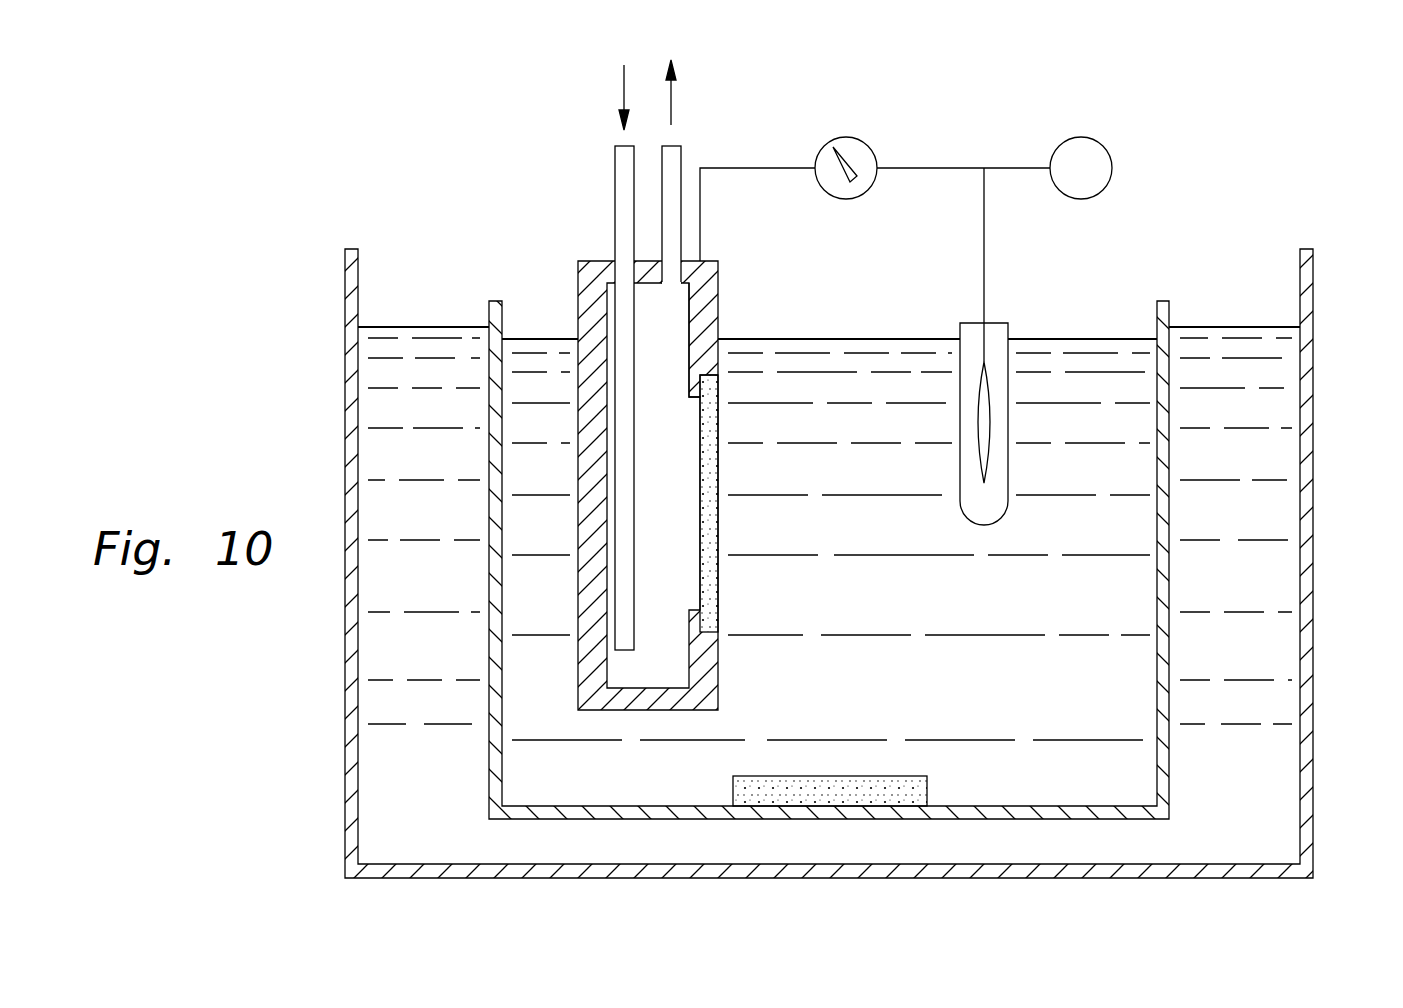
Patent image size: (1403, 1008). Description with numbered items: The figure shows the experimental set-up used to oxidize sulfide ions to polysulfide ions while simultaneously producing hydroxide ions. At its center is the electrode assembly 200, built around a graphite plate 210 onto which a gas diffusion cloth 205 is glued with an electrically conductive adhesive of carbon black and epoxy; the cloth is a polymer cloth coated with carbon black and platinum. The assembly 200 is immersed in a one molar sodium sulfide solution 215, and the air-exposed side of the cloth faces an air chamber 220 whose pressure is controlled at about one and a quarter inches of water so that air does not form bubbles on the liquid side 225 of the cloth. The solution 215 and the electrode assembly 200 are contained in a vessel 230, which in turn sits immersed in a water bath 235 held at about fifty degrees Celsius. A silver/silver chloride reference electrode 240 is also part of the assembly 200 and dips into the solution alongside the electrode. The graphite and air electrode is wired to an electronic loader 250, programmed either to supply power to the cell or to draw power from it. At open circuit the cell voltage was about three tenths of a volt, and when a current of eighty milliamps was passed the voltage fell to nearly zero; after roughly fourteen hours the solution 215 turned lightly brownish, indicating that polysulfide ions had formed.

The electrode assembly 200 is at (1155, 100).
The gas diffusion cloth 205 is at (722, 474).
The graphite plate 210 is at (688, 385).
The Na2S solution 215 is at (903, 614).
The air chamber 220 is at (657, 593).
The liquid side 225 is at (722, 427).
The vessel 230 is at (1169, 563).
The water bath 235 is at (1313, 563).
The Ag/AgCl reference electrode 240 is at (1008, 420).
The electronic loader 250 is at (865, 140).